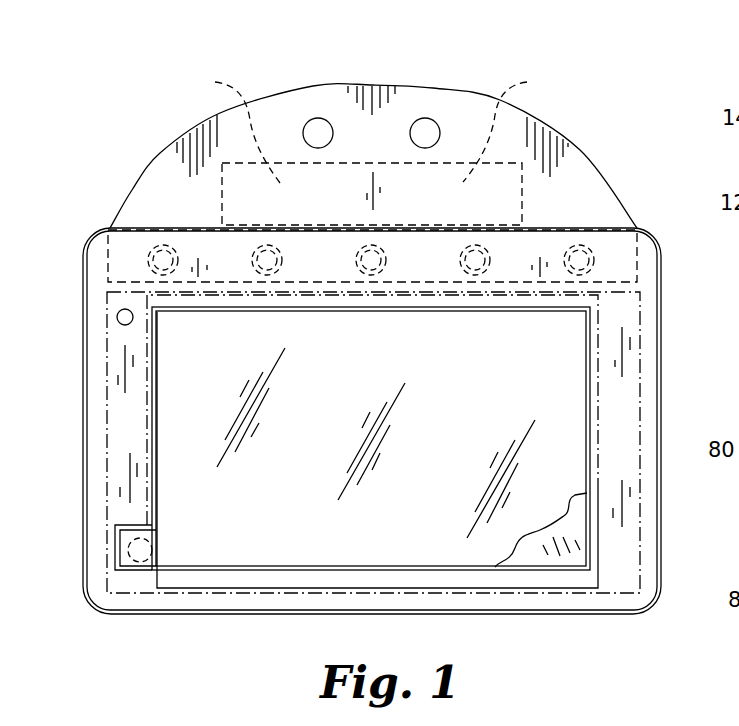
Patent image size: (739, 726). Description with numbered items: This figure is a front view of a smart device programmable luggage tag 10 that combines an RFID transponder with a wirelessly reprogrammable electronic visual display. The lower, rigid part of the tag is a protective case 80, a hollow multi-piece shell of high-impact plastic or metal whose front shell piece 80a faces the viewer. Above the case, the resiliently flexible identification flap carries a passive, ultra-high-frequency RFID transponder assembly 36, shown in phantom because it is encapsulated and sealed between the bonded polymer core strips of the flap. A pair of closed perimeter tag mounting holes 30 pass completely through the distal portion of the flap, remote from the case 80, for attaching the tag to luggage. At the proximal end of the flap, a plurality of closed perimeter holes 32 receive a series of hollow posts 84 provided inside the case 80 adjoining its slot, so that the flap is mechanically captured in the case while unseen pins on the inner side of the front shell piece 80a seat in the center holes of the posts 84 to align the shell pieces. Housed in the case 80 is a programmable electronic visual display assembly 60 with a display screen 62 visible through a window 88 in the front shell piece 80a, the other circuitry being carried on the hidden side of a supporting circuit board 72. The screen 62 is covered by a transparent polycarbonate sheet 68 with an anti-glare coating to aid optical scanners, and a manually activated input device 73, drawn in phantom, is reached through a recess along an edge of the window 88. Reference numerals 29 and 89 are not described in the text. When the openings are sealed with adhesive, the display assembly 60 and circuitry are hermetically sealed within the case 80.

The luggage tag 10 is at (391, 42).
The protective case 80 is at (95, 384).
The first shell piece 80a is at (97, 258).
The tag mounting holes 30 is at (318, 130).
The RFID transponder assembly 36 is at (370, 127).
The holes 32 is at (162, 245).
The hollow posts 84 is at (578, 245).
The circuit board 72 is at (642, 303).
The display assembly 60 is at (603, 417).
The window 88 is at (587, 370).
The display screen 62 is at (473, 422).
The transparent polycarbonate sheet 68 is at (525, 556).
The hole 29 is at (117, 317).
The notch 89 is at (124, 534).
The manually activated input device 73 is at (140, 560).